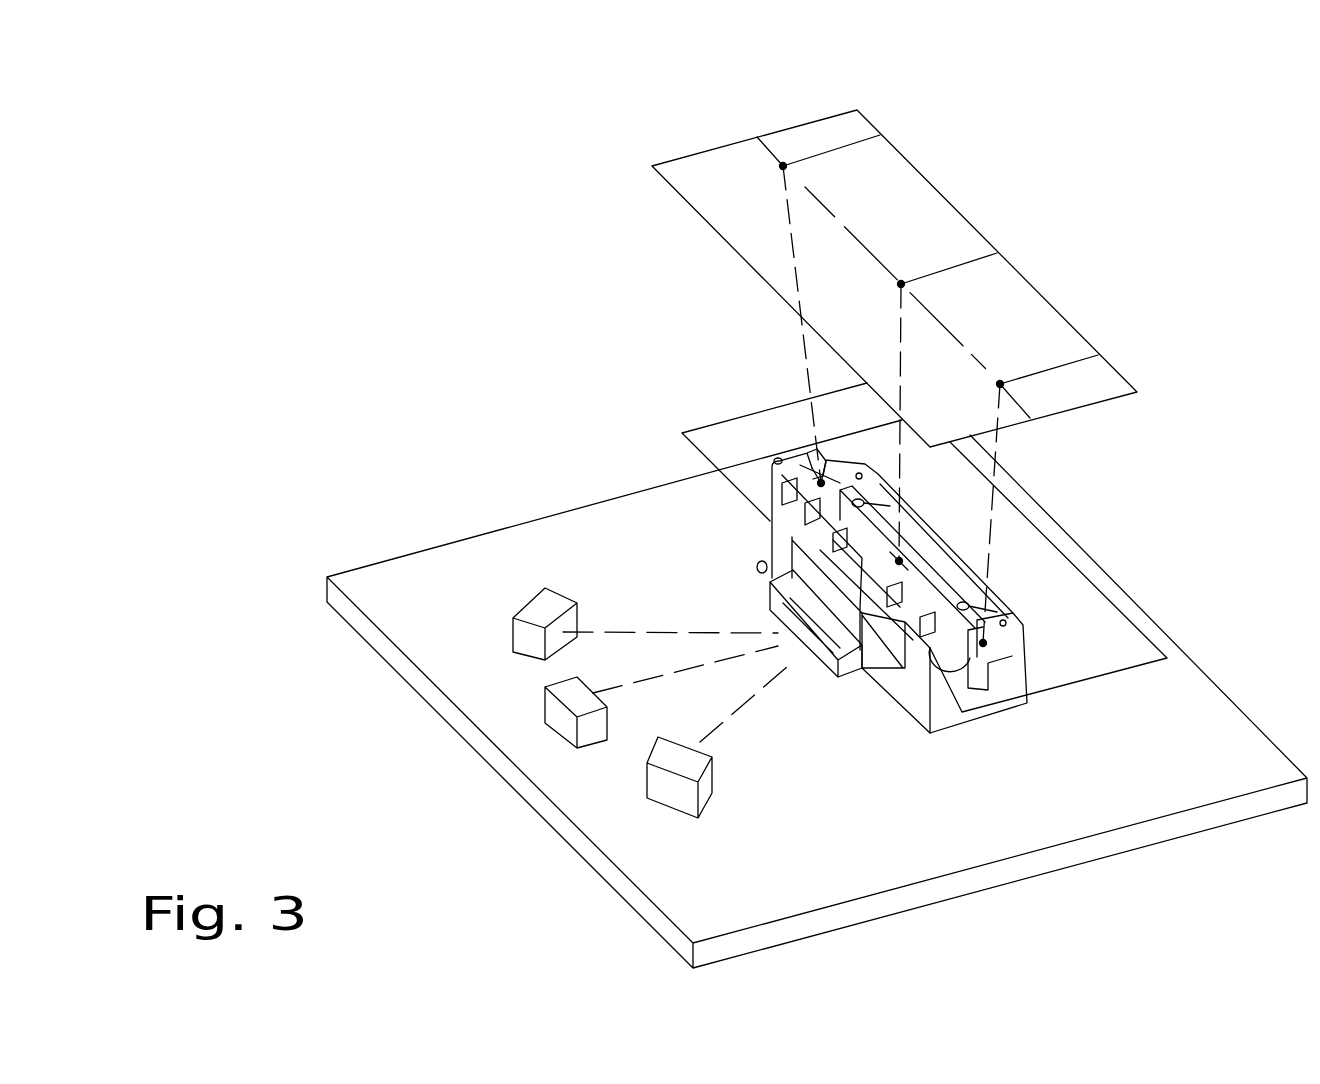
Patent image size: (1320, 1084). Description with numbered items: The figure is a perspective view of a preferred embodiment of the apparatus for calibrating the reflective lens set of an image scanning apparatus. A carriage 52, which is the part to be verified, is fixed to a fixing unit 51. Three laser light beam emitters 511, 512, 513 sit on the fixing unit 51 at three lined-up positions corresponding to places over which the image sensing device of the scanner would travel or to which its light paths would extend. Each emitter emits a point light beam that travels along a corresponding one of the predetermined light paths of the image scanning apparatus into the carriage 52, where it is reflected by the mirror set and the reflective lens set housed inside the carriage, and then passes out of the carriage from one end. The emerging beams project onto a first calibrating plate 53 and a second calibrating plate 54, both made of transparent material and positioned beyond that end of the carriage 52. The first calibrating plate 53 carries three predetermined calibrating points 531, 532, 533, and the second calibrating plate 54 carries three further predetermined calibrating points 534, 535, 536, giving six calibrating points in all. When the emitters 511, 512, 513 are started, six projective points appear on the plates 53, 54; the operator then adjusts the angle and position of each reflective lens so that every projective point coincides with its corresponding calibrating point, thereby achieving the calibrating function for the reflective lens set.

The fixing unit 51 is at (1218, 723).
The laser light beam emitter 511 is at (527, 637).
The laser light beam emitter 512 is at (563, 718).
The laser light beam emitter 513 is at (675, 797).
The carriage 52 is at (898, 682).
The first calibrating plate 53 is at (1107, 637).
The calibrating point 531 is at (823, 481).
The calibrating point 532 is at (901, 560).
The calibrating point 533 is at (1023, 628).
The second calibrating plate 54 is at (1020, 312).
The calibrating point 534 is at (880, 135).
The calibrating point 535 is at (997, 253).
The calibrating point 536 is at (1098, 355).